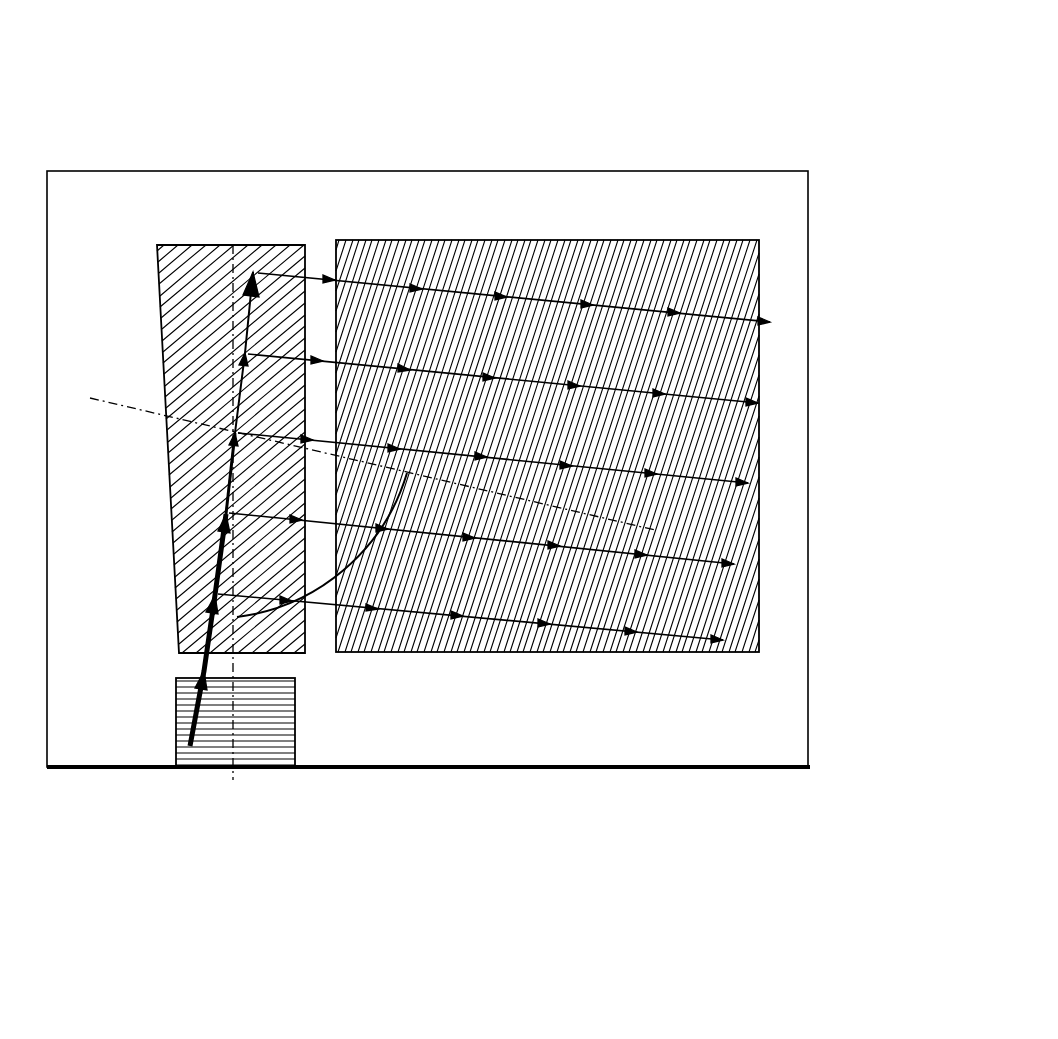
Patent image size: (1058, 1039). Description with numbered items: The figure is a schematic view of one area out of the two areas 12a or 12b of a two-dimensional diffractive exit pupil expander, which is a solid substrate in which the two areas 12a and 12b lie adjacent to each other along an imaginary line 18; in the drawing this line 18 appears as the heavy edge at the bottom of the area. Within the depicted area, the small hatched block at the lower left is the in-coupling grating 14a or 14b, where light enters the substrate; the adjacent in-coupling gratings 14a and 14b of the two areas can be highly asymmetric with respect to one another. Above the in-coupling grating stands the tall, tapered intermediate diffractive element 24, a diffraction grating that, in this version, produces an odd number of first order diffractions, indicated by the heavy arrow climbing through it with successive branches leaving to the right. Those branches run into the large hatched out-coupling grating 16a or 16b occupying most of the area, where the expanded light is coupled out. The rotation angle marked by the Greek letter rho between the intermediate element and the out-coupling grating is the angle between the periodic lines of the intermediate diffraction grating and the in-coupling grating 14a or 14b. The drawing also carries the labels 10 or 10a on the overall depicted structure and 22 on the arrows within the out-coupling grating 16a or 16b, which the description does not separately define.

The ion implantation apparatus 10 is at (428, 447).
The ion implantation apparatus 10a is at (618, 130).
The area 12a is at (427, 436).
The area 12b is at (347, 205).
The in-coupling grating 14a is at (337, 722).
The in-coupling grating 14b is at (278, 738).
The out-coupling grating 16a is at (547, 417).
The out-coupling grating 16b is at (505, 247).
The line 18 is at (340, 770).
The magnetic field lines 22 is at (465, 632).
The intermediate diffractive element 24 is at (187, 467).